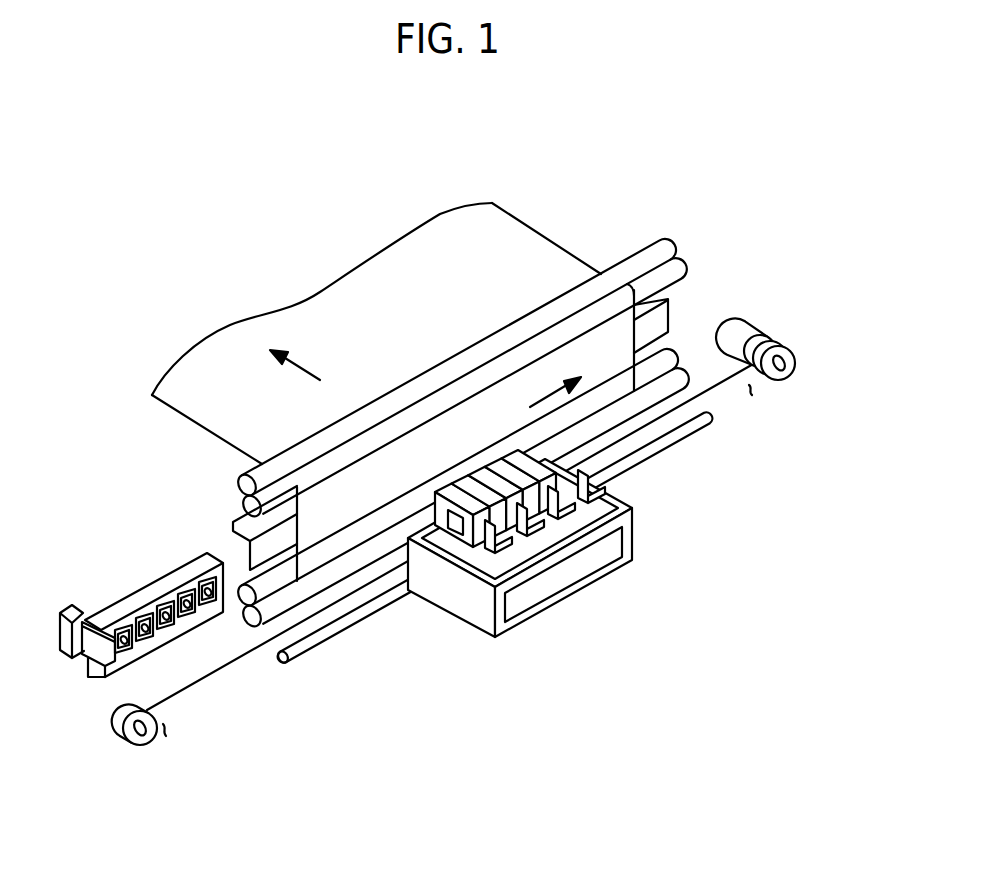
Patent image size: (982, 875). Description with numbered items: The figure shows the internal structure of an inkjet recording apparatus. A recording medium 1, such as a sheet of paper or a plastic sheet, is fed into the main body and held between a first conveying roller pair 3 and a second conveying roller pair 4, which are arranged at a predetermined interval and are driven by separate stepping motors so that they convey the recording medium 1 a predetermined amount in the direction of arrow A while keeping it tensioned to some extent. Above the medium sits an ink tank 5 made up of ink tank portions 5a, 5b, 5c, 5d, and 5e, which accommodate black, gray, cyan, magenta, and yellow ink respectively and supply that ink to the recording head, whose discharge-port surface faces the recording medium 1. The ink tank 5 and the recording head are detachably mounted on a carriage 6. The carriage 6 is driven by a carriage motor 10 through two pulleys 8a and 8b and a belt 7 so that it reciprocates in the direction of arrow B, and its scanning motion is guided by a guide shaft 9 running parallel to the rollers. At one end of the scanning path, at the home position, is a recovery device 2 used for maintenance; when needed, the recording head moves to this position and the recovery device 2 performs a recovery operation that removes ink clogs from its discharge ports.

The recording medium 1 is at (517, 237).
The recovery device 2 is at (178, 579).
The first conveying roller pair 3 is at (677, 387).
The second conveying roller pair 4 is at (674, 270).
The ink tank 5 is at (479, 450).
The ink tank portion 5a is at (447, 493).
The ink tank portion 5b is at (472, 483).
The ink tank portion 5c is at (487, 475).
The ink tank portion 5d is at (498, 468).
The ink tank portion 5e is at (523, 450).
The carriage 6 is at (627, 548).
The belt 7 is at (213, 673).
The pulley 8a is at (793, 362).
The pulley 8b is at (122, 720).
The guide shaft 9 is at (333, 628).
The carriage motor 10 is at (748, 328).